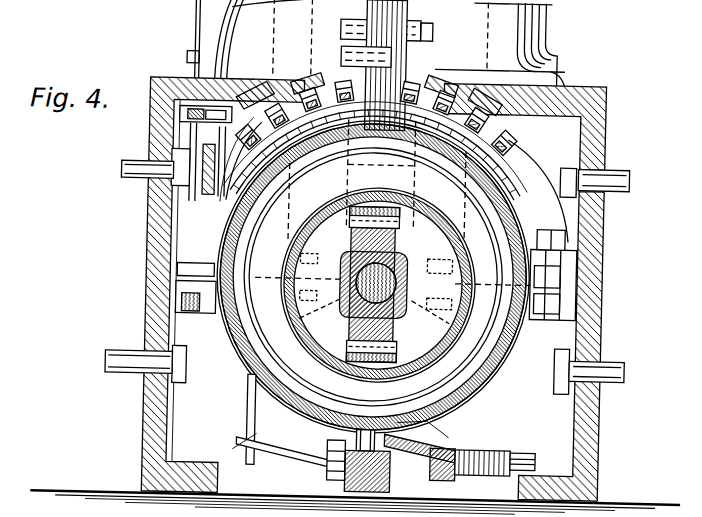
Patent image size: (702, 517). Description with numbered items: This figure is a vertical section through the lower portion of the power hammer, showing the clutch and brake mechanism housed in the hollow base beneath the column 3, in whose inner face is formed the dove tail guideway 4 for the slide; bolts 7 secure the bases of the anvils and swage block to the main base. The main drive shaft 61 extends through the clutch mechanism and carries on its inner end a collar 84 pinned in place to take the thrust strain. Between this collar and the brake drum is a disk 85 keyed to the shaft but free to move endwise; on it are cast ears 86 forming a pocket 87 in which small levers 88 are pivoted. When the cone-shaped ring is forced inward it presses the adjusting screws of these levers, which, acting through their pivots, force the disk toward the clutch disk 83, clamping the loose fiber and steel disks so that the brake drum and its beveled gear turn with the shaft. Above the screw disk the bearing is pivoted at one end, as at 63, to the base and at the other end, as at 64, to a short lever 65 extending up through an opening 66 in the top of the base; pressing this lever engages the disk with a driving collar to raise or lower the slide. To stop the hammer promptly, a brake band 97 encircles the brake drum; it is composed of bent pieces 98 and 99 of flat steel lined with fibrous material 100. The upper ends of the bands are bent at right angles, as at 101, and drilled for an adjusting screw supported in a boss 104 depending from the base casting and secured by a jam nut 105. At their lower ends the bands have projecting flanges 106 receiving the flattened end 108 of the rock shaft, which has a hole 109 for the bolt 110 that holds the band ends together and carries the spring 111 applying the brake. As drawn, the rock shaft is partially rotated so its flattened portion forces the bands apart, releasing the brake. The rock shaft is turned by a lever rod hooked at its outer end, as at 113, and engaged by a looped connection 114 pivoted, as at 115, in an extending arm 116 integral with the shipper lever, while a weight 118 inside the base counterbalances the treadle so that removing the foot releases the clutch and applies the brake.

The column 3 is at (501, 43).
The dove tail guideway 4 is at (410, 30).
The bolts 7 is at (601, 315).
The main drive shaft 61 is at (322, 332).
The pivot of bearing to base 63 is at (551, 274).
The pivot of bearing to short lever 64 is at (176, 120).
The short lever 65 is at (190, 44).
The opening in top of base 66 is at (164, 82).
The clutch disk 83 is at (436, 357).
The collar 84 is at (480, 378).
The disk 85 is at (405, 323).
The ears 86 is at (356, 236).
The pocket 87 is at (422, 287).
The small levers 88 is at (350, 271).
The brake band 97 is at (497, 362).
The bent piece of flat steel 98 is at (500, 206).
The bent piece of flat steel 99 is at (244, 345).
The fibrous material 100 is at (485, 400).
The right-angle bent upper ends of bands 101 is at (410, 92).
The boss 104 is at (268, 98).
The jam nut 105 is at (540, 59).
The projecting flanges 106 is at (302, 105).
The flattened portion of rock shaft 108 is at (302, 440).
The hole 109 is at (448, 425).
The bolt 110 is at (524, 463).
The spring 111 is at (462, 472).
The hooked end of lever rod 113 is at (250, 456).
The looped connection 114 is at (252, 445).
The pivot 115 is at (266, 62).
The extending arm 116 is at (226, 181).
The weight 118 is at (210, 232).